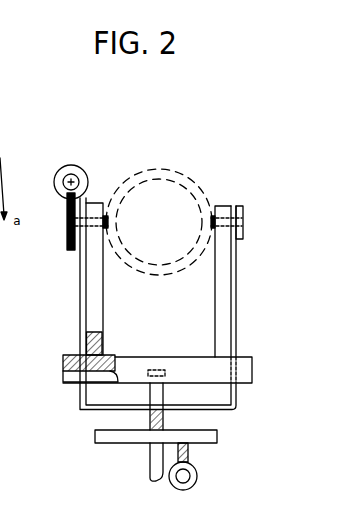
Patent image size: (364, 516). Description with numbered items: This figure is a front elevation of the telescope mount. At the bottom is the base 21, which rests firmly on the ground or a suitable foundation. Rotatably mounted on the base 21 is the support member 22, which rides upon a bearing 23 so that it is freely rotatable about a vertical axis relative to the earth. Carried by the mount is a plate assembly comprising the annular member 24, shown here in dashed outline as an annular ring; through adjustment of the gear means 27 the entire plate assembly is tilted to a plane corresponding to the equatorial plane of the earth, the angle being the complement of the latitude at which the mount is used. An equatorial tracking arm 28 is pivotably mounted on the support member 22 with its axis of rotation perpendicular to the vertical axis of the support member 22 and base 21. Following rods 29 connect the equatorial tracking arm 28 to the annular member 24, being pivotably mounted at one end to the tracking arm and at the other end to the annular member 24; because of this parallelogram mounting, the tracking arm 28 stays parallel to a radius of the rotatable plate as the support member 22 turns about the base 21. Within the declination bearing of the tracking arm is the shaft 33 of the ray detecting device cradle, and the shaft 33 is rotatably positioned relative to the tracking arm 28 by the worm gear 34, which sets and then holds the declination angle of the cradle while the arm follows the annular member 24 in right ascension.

The base 21 is at (155, 462).
The support member 22 is at (92, 321).
The bearing 23 is at (152, 376).
The annular member 24 is at (95, 437).
The gear means 27 is at (198, 468).
The equatorial tracking arm 28 is at (243, 210).
The following rod 29 is at (80, 303).
The shaft 33 is at (107, 212).
The worm gear 34 is at (62, 200).